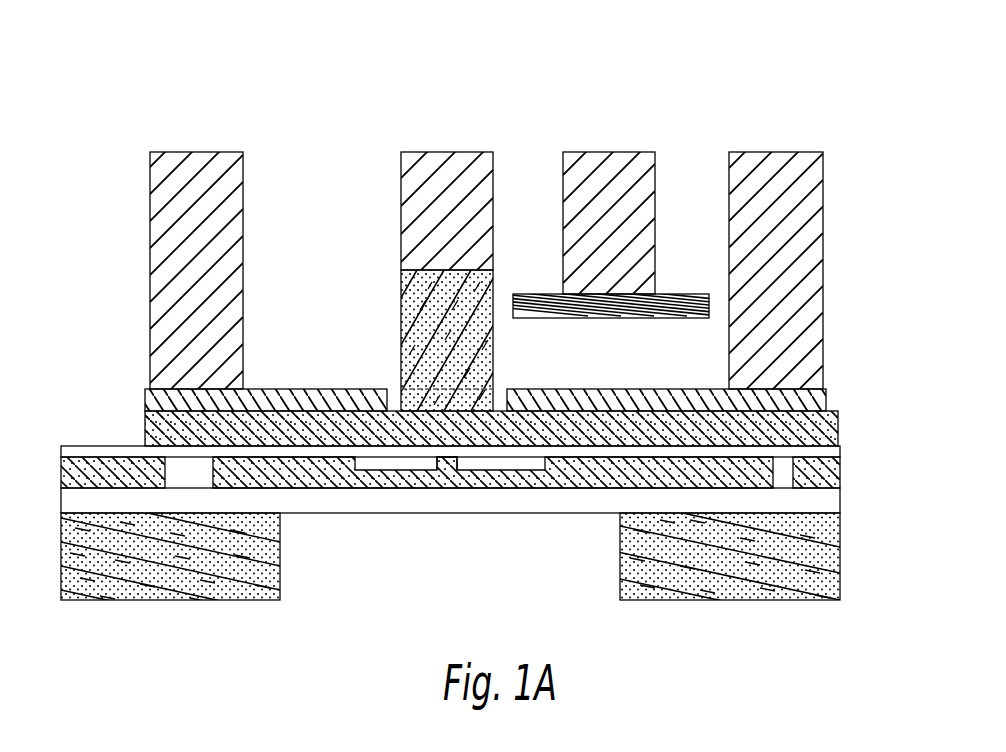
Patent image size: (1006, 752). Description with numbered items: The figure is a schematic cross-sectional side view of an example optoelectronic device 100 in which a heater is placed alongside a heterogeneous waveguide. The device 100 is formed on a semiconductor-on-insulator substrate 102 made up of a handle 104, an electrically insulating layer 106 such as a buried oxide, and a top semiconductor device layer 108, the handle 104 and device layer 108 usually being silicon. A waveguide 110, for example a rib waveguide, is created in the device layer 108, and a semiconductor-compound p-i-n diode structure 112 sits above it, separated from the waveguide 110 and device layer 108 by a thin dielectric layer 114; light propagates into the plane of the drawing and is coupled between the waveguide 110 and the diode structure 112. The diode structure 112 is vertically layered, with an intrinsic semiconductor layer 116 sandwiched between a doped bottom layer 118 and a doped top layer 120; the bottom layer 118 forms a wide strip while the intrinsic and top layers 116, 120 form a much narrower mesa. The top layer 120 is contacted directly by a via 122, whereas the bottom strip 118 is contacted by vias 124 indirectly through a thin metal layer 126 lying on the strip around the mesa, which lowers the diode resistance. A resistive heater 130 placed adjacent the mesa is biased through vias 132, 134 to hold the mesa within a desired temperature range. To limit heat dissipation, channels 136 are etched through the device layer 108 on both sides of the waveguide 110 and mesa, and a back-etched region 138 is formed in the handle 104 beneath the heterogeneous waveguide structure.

The optoelectronic device 100 is at (850, 60).
The semiconductor-on-insulator substrate 102 is at (905, 455).
The handle 104 is at (476, 562).
The electrically insulating layer 106 is at (840, 501).
The device layer 108 is at (840, 478).
The waveguide 110 is at (455, 459).
The p-i-n diode structure 112 is at (121, 271).
The dielectric layer 114 is at (840, 451).
The intrinsic semiconductor layer 116 is at (422, 412).
The bottom layer 118 is at (838, 426).
The top layer 120 is at (401, 291).
The via 122 is at (411, 152).
The vias 124 is at (162, 152).
The metal layer 126 is at (826, 396).
The resistive heater 130 is at (610, 318).
The via 132 is at (574, 152).
The via 134 is at (565, 223).
The channels 136 is at (190, 478).
The back-etched region 138 is at (320, 560).